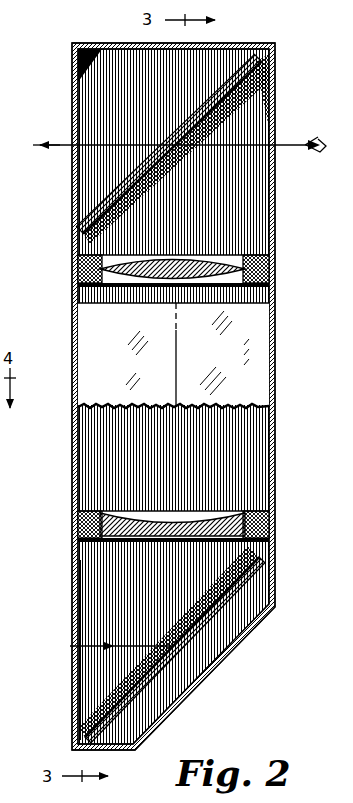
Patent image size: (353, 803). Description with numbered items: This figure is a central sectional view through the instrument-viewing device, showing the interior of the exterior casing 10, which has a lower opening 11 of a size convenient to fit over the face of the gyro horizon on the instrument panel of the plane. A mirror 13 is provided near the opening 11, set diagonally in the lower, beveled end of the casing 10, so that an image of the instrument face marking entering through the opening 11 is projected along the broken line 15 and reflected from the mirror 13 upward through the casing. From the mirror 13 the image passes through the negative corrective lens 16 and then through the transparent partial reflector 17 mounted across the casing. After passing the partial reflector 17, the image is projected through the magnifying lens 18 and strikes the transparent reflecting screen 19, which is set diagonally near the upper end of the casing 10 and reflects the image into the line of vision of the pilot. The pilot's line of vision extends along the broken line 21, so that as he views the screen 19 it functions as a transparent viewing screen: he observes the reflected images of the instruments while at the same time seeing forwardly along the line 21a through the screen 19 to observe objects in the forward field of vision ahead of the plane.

The exterior casing 10 is at (272, 322).
The lower opening 11 is at (76, 606).
The mirror 13 is at (247, 640).
The broken line 15 is at (70, 646).
The negative corrective lens 16 is at (227, 533).
The transparent partial reflector 17 is at (253, 388).
The magnifying lens 18 is at (183, 290).
The transparent reflecting screen 19 is at (112, 198).
The broken line 21 is at (290, 143).
The line 21a is at (58, 143).